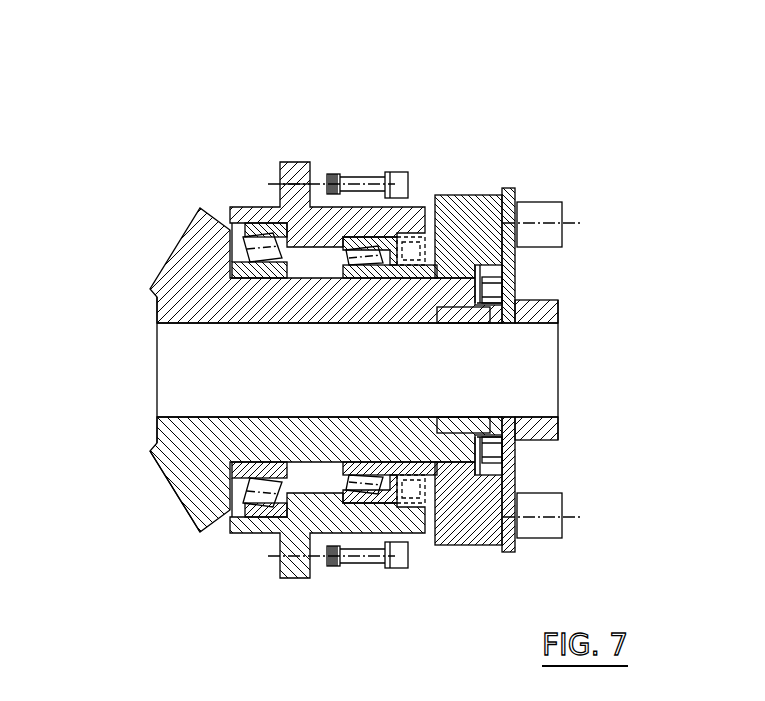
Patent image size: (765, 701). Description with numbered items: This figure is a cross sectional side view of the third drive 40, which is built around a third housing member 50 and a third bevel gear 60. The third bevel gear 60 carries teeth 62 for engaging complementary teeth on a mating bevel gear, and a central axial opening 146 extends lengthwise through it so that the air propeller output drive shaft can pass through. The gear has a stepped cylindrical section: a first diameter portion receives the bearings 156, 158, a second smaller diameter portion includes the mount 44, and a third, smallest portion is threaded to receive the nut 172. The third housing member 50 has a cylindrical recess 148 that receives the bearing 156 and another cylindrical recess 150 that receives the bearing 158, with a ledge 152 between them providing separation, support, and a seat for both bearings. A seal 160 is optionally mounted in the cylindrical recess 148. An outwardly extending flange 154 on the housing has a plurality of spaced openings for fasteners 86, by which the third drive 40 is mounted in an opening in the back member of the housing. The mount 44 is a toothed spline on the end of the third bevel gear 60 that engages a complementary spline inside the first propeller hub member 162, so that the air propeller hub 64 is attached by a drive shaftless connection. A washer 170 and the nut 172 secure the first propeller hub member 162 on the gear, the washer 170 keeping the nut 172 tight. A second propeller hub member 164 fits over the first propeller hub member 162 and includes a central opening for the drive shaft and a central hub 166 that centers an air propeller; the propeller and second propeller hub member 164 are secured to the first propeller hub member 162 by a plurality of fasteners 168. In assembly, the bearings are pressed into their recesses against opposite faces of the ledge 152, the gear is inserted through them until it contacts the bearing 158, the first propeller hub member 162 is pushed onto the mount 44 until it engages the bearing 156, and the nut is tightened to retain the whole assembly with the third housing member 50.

The third drive 40 is at (333, 102).
The mount 44 is at (452, 257).
The third housing member 50 is at (413, 545).
The third bevel gear 60 is at (205, 528).
The teeth 62 is at (165, 485).
The air propeller hub 64 is at (449, 137).
The fasteners 86 is at (397, 172).
The central axial opening 146 is at (172, 365).
The cylindrical recess 148 is at (396, 243).
The cylindrical recess 150 is at (233, 231).
The ledge 152 is at (302, 245).
The outwardly extending flange 154 is at (283, 577).
The bearing 156 is at (394, 478).
The bearing 158 is at (255, 520).
The seal 160 is at (377, 568).
The first propeller hub member 162 is at (492, 196).
The second propeller hub member 164 is at (558, 427).
The central hub 166 is at (558, 301).
The fasteners 168 is at (562, 212).
The washer 170 is at (516, 265).
The nut 172 is at (515, 452).